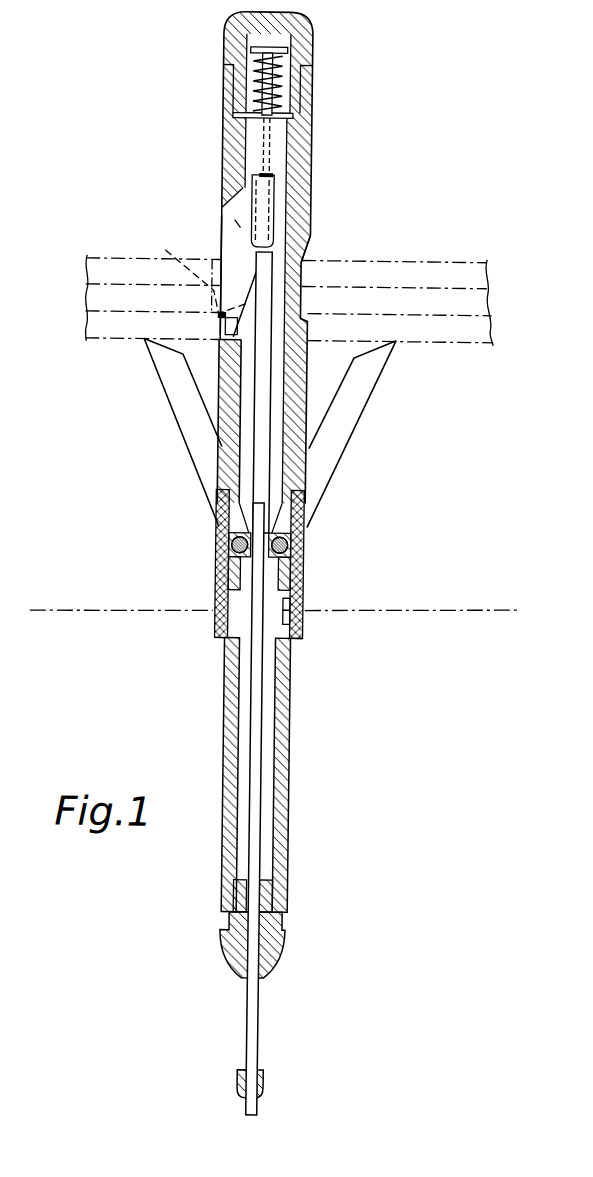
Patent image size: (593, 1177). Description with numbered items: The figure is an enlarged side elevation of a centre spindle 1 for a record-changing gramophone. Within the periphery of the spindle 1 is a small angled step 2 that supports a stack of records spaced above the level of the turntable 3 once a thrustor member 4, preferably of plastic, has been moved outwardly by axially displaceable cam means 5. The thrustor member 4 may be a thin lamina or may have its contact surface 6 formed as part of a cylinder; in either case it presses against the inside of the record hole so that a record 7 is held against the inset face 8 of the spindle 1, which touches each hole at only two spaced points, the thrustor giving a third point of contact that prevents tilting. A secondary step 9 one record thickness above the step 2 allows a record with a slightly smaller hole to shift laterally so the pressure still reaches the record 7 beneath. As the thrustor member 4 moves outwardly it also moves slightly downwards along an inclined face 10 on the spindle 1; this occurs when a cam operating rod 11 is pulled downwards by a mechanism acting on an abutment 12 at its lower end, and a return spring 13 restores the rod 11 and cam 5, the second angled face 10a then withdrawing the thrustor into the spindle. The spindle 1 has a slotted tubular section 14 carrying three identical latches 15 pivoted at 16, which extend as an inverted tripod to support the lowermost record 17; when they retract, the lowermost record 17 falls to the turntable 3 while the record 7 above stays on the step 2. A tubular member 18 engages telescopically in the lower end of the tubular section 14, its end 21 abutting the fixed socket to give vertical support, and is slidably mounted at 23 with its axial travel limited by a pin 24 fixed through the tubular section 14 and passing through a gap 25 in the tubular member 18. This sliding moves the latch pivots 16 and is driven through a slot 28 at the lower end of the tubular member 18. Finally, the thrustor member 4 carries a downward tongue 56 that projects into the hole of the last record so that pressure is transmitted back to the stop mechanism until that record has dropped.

The centre spindle 1 is at (307, 151).
The angled step 2 is at (302, 320).
The turntable 3 is at (275, 593).
The thrustor member 4 is at (228, 233).
The cam means 5 is at (272, 206).
The contact surface 6 is at (217, 250).
The record 7 is at (469, 304).
The inset face 8 is at (300, 305).
The secondary step 9 is at (300, 287).
The inclined face 10 is at (190, 270).
The second angled face 10a is at (232, 226).
The cam operating rod 11 is at (254, 368).
The abutment 12 is at (268, 1084).
The return spring 13 is at (277, 96).
The tubular section 14 is at (299, 550).
The latches 15 is at (369, 379).
The pivots 16 is at (245, 547).
The lowermost record 17 is at (487, 335).
The tubular member 18 is at (292, 765).
The end of tubular section 21 is at (296, 640).
The sliding mounting 23 is at (220, 603).
The pin 24 is at (288, 606).
The gap 25 is at (290, 617).
The slot 28 is at (287, 926).
The downward tongue 56 is at (216, 329).